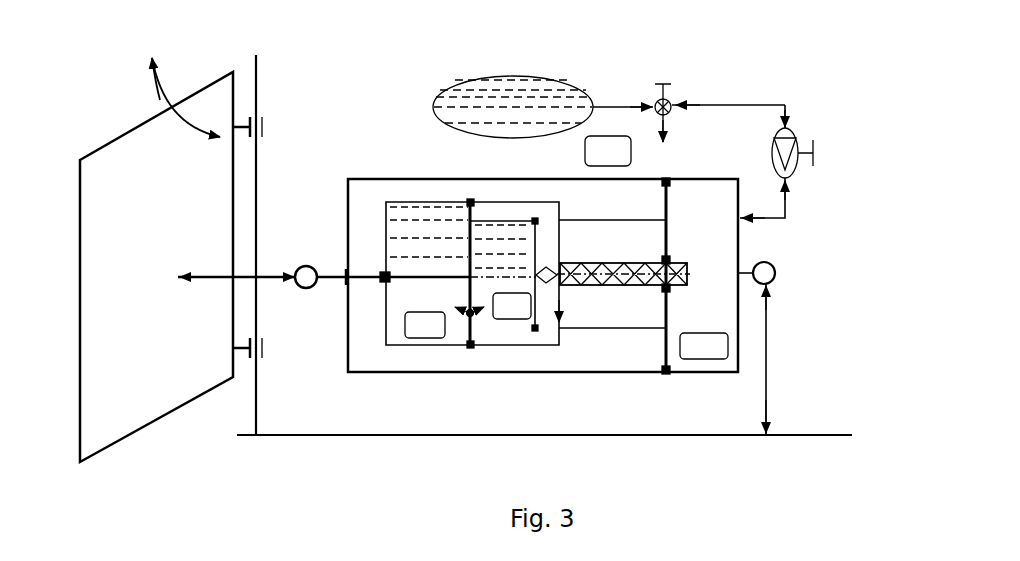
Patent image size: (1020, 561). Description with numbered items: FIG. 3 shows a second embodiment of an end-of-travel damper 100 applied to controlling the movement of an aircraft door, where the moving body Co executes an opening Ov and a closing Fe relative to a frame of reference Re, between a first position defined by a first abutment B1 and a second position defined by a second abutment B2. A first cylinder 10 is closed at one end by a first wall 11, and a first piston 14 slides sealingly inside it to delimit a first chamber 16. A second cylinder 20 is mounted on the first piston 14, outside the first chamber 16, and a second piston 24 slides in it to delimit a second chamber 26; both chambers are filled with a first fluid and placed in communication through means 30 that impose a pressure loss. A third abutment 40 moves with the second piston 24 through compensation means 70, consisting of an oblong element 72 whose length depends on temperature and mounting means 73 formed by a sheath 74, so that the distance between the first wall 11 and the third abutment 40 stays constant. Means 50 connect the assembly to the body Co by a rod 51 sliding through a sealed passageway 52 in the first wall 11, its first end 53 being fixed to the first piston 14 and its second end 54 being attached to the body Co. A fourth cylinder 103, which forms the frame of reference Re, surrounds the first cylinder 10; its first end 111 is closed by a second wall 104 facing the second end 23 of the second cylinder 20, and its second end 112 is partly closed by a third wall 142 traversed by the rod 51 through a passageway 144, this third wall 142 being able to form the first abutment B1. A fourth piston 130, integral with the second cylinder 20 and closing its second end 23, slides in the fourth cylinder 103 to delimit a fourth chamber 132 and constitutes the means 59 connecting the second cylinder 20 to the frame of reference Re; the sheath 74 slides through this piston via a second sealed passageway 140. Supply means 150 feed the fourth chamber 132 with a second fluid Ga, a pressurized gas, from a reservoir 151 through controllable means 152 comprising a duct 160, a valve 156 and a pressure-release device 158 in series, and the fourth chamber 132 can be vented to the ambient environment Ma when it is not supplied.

The first cylinder 10 is at (410, 348).
The first wall 11 is at (386, 228).
The first piston 14 is at (470, 331).
The first chamber 16 is at (425, 326).
The second cylinder 20 is at (584, 329).
The second end of the second cylinder 23 is at (661, 329).
The second piston 24 is at (540, 237).
The second chamber 26 is at (512, 307).
The means for placing the first and second chambers in fluidic communication 30 is at (475, 318).
The third abutment 40 is at (688, 272).
The means for connecting the second cylinder to the body 50 is at (338, 258).
The rod 51 is at (331, 271).
The sealed passageway 52 is at (384, 282).
The first end of the rod 53 is at (468, 278).
The second end of the rod 54 is at (296, 269).
The means for connecting the second cylinder to the frame of reference 59 is at (769, 398).
The compensation means 70 is at (622, 260).
The oblong element 72 is at (627, 285).
The means for mounting the oblong element 73 is at (568, 285).
The sheath 74 is at (685, 287).
The appliance 100 is at (516, 141).
The fourth cylinder 103 is at (620, 373).
The second wall 104 is at (740, 228).
The first end of the fourth cylinder 111 is at (727, 178).
The second end of the fourth cylinder 112 is at (358, 176).
The fourth piston 130 is at (667, 233).
The fourth chamber 132 is at (704, 347).
The second sealed passageway 140 is at (668, 259).
The third wall 142 is at (348, 350).
The passageway 144 is at (345, 280).
The means for supplying the fourth chamber with second fluid 150 is at (716, 100).
The reservoir 151 is at (504, 103).
The controllable means for fluidically connecting the reservoir with the fourth cham 152 is at (673, 90).
The valve 156 is at (650, 100).
The pressure-release device 158 is at (800, 140).
The duct 160 is at (785, 85).
The opening Ov is at (147, 63).
The closing Fe is at (207, 130).
The body Co is at (147, 170).
The first abutment B1 is at (345, 212).
The second abutment B2 is at (744, 248).
The second fluid Ga is at (470, 97).
The ambient environment Ma is at (608, 151).
The frame of reference Re is at (428, 437).